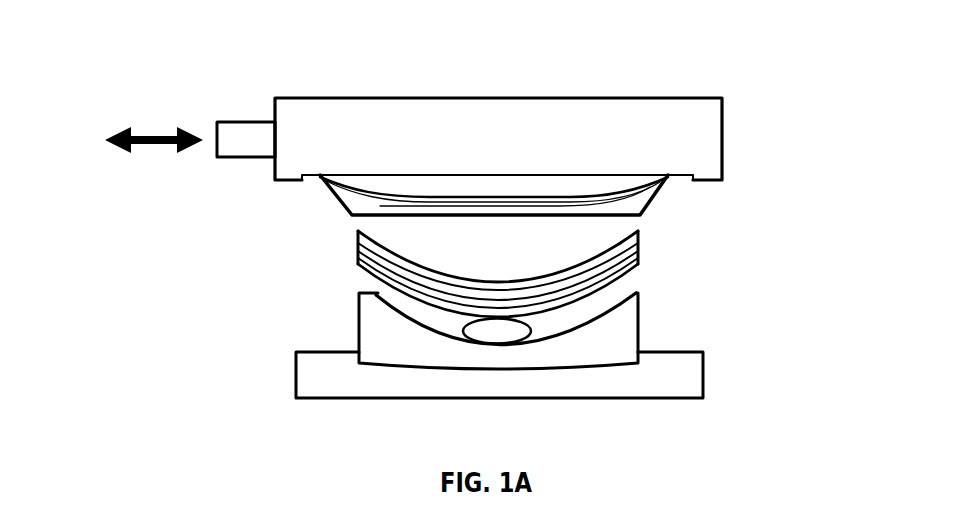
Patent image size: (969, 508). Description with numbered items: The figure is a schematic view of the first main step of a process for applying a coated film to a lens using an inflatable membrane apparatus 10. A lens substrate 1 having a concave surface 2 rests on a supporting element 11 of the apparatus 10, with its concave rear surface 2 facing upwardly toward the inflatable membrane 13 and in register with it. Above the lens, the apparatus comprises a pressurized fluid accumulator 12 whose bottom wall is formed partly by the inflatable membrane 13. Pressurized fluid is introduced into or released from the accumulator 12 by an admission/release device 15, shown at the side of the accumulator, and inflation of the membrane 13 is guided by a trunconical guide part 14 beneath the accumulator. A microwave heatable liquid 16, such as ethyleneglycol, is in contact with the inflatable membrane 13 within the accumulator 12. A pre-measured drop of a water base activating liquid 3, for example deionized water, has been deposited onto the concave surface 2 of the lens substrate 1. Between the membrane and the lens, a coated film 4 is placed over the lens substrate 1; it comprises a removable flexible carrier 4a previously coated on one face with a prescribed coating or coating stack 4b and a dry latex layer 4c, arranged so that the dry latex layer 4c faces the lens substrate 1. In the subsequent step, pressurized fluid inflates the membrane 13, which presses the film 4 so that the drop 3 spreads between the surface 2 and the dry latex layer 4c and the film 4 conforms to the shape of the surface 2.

The lens substrate 1 is at (640, 322).
The concave surface 2 is at (386, 308).
The water base activating liquid 3 is at (638, 284).
The coated film 4 is at (640, 243).
The removable flexible carrier 4a is at (358, 243).
The coating stack 4b is at (358, 251).
The dry latex layer 4c is at (358, 262).
The inflatable membrane apparatus 10 is at (255, 91).
The supporting element 11 is at (296, 362).
The pressurized fluid accumulator 12 is at (296, 107).
The inflatable membrane 13 is at (708, 157).
The trunconical guide part 14 is at (405, 189).
The admission/release device 15 is at (217, 122).
The microwave heatable liquid 16 is at (356, 209).